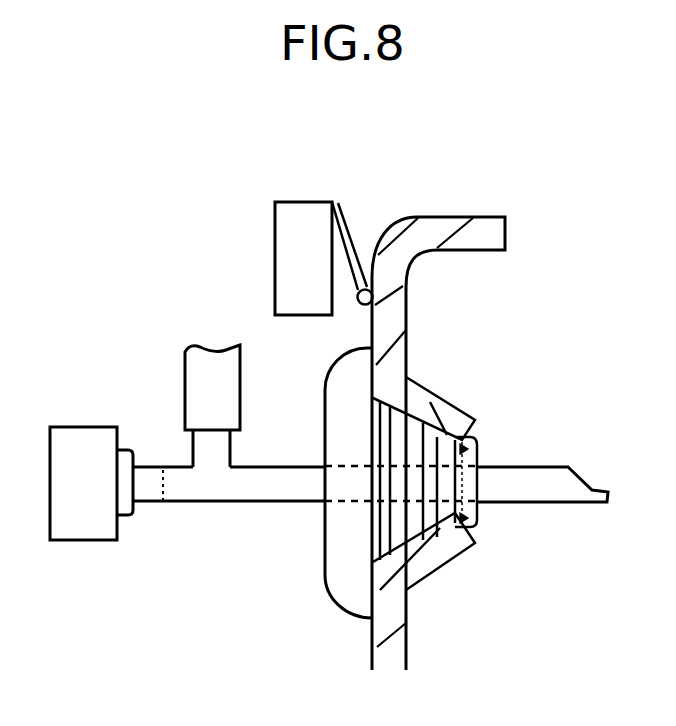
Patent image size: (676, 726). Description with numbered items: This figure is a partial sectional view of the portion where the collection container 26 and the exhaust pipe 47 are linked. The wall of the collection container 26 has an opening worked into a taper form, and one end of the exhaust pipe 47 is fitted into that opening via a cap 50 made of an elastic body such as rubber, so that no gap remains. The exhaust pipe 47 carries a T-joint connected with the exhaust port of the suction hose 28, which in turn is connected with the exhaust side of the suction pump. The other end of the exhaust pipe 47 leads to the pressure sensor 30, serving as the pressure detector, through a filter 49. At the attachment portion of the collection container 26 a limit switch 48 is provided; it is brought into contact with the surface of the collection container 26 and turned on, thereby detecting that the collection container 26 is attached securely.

The collection container 26 is at (463, 213).
The suction hose 28 is at (185, 352).
The pressure sensor 30 is at (73, 425).
The exhaust pipe 47 is at (227, 507).
The limit switch 48 is at (275, 212).
The filter 49 is at (163, 478).
The cap 50 is at (335, 592).